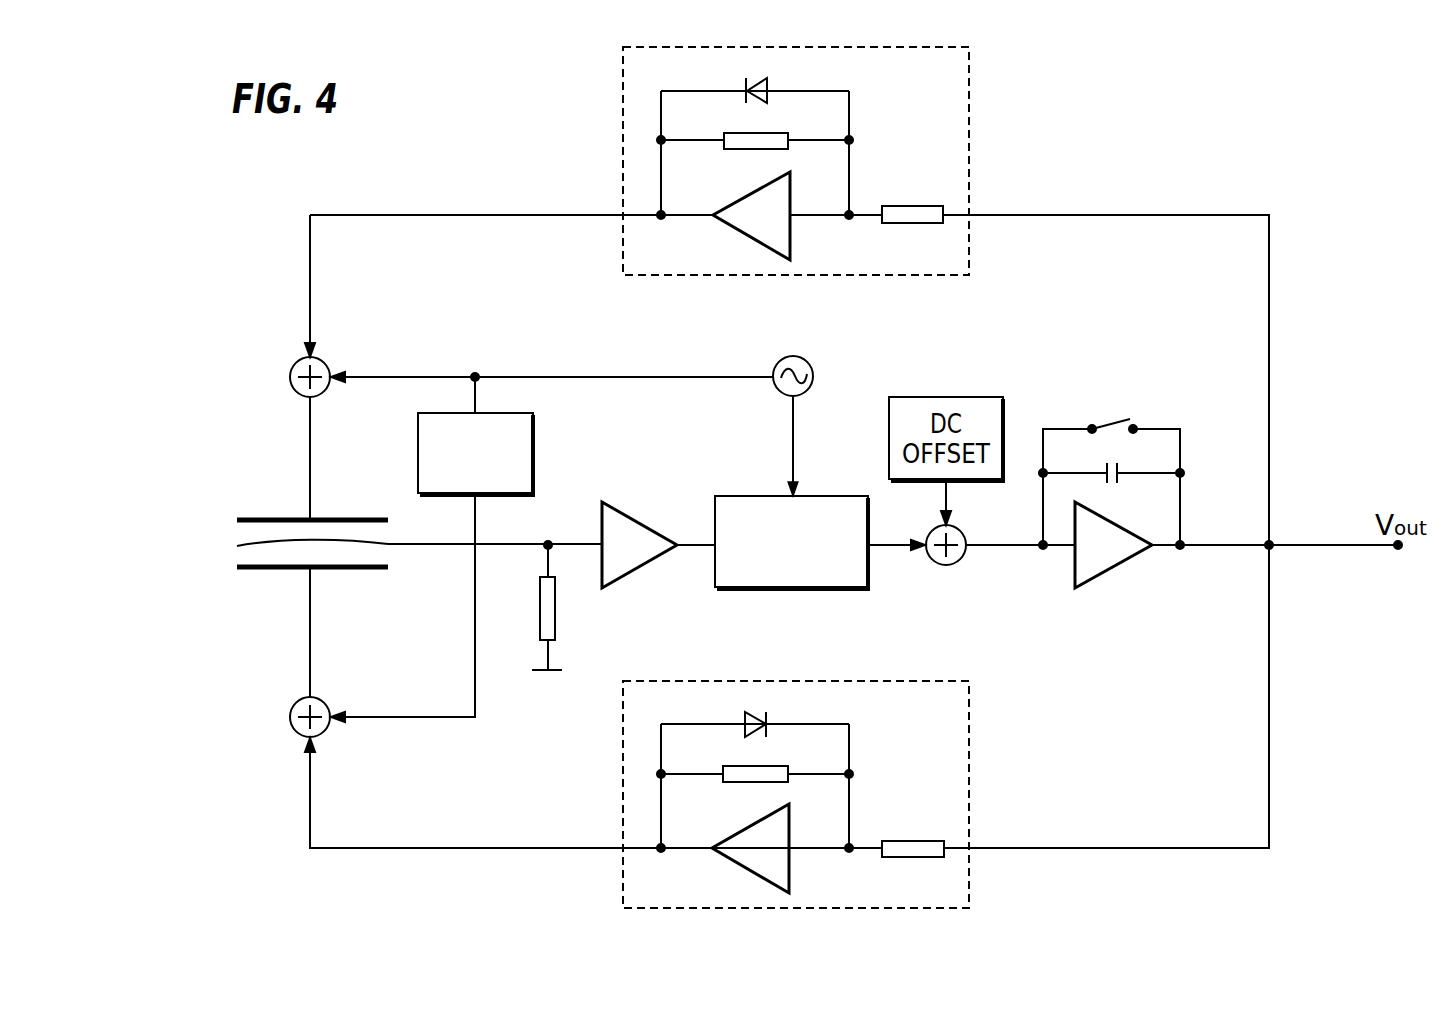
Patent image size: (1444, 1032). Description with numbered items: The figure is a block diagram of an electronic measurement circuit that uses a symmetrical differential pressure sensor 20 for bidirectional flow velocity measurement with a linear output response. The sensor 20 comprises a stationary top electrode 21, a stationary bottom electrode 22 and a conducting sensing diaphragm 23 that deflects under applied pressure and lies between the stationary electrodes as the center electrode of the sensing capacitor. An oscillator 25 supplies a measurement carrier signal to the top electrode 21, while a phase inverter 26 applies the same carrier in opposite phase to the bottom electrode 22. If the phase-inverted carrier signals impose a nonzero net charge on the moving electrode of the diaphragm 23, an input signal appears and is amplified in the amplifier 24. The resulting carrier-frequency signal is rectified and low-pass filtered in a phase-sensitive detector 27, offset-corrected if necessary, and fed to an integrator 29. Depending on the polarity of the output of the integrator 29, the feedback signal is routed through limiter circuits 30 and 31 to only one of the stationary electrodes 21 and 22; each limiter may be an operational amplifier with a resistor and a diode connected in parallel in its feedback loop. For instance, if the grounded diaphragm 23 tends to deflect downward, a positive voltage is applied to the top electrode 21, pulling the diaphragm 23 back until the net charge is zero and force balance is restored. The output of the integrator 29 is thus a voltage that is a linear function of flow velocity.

The symmetrical differential pressure sensor 20 is at (255, 508).
The stationary top electrode 21 is at (363, 518).
The stationary bottom electrode 22 is at (345, 570).
The conducting sensing diaphragm 23 is at (253, 542).
The amplifier 24 is at (647, 567).
The oscillator 25 is at (810, 392).
The phase inverter 26 is at (533, 443).
The phase-sensitive detector 27 is at (837, 496).
The integrator 29 is at (1095, 590).
The limiter circuit 30 is at (969, 73).
The limiter circuit 31 is at (970, 875).